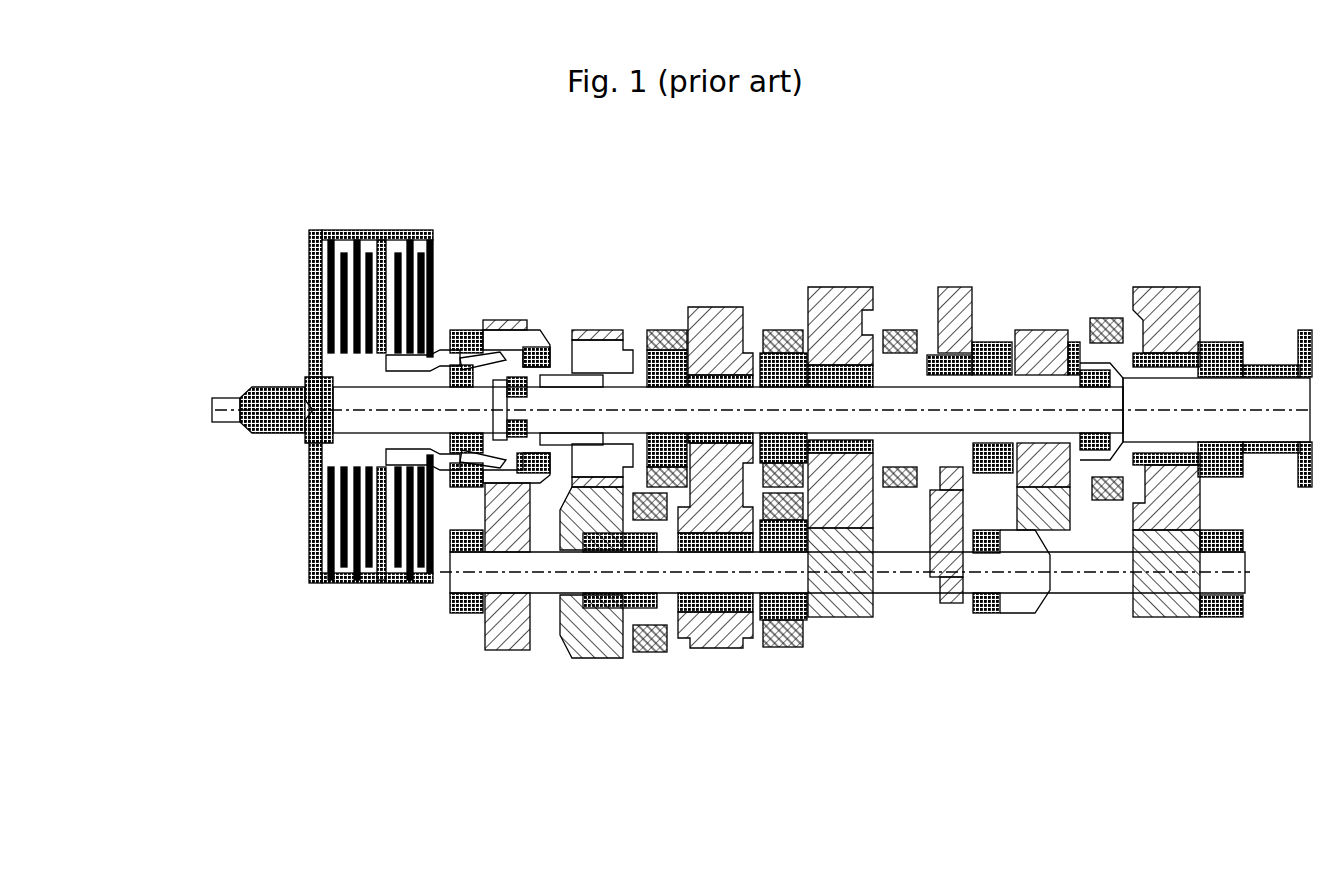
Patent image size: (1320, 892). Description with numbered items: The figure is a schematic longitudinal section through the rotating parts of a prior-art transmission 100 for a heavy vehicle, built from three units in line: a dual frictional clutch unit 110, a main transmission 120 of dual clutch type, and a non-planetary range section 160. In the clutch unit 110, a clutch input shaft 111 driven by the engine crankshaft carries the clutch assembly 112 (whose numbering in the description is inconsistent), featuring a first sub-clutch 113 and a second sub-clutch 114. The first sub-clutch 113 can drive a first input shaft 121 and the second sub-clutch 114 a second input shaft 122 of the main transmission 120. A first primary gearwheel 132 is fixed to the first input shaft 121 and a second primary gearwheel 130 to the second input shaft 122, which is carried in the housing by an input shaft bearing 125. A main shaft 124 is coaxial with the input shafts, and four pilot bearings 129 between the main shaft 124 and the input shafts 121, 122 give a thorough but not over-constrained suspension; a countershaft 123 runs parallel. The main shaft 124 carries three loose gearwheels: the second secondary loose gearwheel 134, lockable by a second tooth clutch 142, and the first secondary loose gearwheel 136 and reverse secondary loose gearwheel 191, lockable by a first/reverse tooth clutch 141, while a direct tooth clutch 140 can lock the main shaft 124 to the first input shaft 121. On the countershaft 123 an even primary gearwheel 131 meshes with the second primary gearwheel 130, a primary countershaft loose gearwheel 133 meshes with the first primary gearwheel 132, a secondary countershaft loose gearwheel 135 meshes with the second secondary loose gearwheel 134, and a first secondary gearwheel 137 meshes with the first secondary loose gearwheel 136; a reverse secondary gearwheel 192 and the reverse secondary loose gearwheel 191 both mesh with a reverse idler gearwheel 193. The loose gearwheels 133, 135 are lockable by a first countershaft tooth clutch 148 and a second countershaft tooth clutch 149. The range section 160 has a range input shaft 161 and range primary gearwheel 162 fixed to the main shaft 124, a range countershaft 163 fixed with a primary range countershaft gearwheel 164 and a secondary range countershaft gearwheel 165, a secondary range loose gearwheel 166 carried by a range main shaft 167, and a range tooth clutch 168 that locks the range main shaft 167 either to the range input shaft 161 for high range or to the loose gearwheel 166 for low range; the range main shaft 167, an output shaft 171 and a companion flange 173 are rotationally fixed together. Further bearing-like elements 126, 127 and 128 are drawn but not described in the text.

The transmission 100 is at (330, 77).
The dual frictional clutch unit 110 is at (132, 154).
The clutch input shaft 111 is at (250, 402).
The clutch housing 112 is at (375, 227).
The first sub-clutch 113 is at (392, 360).
The second sub-clutch 114 is at (254, 406).
The main transmission 120 is at (170, 715).
The first input shaft 121 is at (340, 586).
The second input shaft 122 is at (403, 424).
The countershaft 123 is at (506, 652).
The main shaft 124 is at (530, 402).
The input shaft bearing 125 is at (448, 452).
The bearing 126 is at (429, 675).
The countershaft end 127 is at (1147, 686).
The bearing carrier 128 is at (1037, 424).
The pilot bearings 129 is at (548, 342).
The second primary gearwheel 130 is at (462, 490).
The even primary gearwheel 131 is at (839, 686).
The first primary gearwheel 132 is at (602, 390).
The primary countershaft loose gearwheel 133 is at (603, 660).
The second secondary loose gearwheel 134 is at (713, 492).
The secondary countershaft loose gearwheel 135 is at (717, 707).
The first secondary loose gearwheel 136 is at (898, 490).
The first secondary gearwheel 137 is at (846, 630).
The direct tooth clutch 140 is at (675, 492).
The first/reverse tooth clutch 141 is at (935, 562).
The second tooth clutch 142 is at (843, 504).
The first countershaft tooth clutch 148 is at (637, 677).
The second countershaft tooth clutch 149 is at (790, 655).
The range section 160 is at (1278, 837).
The range input shaft 161 is at (1182, 503).
The range primary gearwheel 162 is at (1165, 462).
The range countershaft 163 is at (1165, 575).
The primary range countershaft gearwheel 164 is at (1218, 612).
The secondary range countershaft gearwheel 165 is at (1222, 545).
The secondary range loose gearwheel 166 is at (1270, 450).
The range main shaft 167 is at (1180, 424).
The range tooth clutch 168 is at (1215, 470).
The output shaft 171 is at (1243, 393).
The companion flange 173 is at (1300, 330).
The reverse secondary loose gearwheel 191 is at (985, 482).
The reverse secondary gearwheel 192 is at (1011, 675).
The reverse idler gearwheel 193 is at (968, 707).